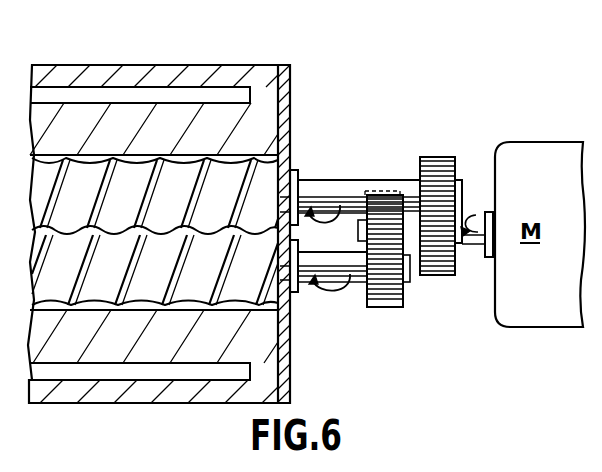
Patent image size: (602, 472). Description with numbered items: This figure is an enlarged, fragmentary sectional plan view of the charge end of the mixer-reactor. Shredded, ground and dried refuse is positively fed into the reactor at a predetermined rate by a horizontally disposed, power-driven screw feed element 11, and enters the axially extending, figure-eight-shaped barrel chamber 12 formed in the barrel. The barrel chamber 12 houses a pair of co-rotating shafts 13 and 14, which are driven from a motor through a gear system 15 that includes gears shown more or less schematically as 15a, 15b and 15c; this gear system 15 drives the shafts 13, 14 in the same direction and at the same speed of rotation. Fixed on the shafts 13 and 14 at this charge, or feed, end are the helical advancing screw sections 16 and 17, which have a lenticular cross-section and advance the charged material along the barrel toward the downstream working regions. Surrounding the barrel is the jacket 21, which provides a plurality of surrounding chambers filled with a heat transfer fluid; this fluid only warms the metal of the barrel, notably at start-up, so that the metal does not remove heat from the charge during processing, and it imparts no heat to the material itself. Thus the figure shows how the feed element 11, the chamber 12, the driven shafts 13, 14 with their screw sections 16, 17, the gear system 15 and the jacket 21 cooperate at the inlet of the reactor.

The screw feed element 11 is at (291, 131).
The barrel chamber 12 is at (193, 158).
The shaft 13 is at (323, 180).
The shaft 14 is at (352, 279).
The gear system 15 is at (444, 109).
The gear 15a is at (447, 156).
The gear 15b is at (436, 277).
The gear 15c is at (385, 308).
The helical advancing screw section 16 is at (176, 295).
The helical advancing screw section 17 is at (162, 160).
The jacket 21 is at (159, 66).